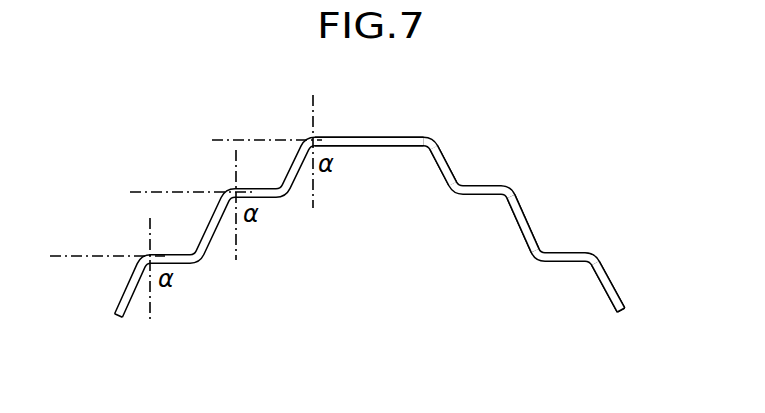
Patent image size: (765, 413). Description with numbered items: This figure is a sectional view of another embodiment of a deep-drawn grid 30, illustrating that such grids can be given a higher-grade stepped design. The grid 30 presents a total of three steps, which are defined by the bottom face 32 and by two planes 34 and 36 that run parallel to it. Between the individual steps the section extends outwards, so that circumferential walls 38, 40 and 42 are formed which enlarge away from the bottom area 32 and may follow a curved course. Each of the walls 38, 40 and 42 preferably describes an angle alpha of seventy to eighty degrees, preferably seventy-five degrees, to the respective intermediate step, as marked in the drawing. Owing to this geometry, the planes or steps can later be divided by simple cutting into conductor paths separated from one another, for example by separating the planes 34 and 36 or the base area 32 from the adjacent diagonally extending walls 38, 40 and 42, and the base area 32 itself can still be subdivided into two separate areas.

The grid 30 is at (547, 151).
The bottom face 32 is at (372, 136).
The plane 34 is at (480, 199).
The plane 36 is at (575, 248).
The circumferential wall 38 is at (447, 167).
The circumferential wall 40 is at (530, 223).
The circumferential wall 42 is at (615, 285).